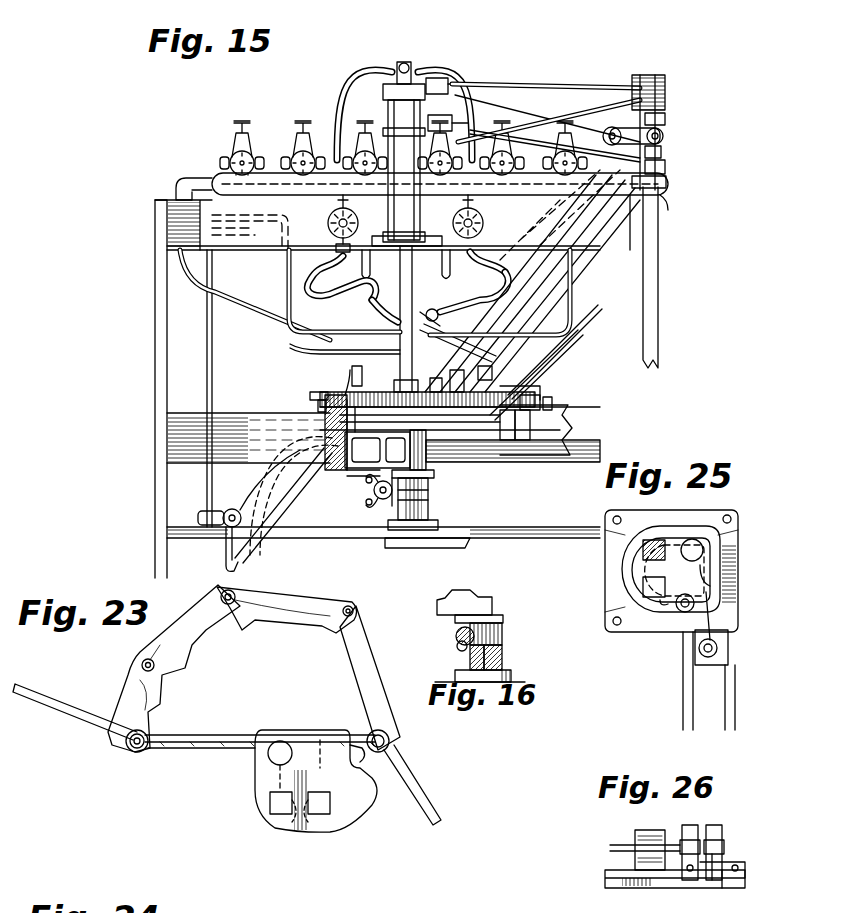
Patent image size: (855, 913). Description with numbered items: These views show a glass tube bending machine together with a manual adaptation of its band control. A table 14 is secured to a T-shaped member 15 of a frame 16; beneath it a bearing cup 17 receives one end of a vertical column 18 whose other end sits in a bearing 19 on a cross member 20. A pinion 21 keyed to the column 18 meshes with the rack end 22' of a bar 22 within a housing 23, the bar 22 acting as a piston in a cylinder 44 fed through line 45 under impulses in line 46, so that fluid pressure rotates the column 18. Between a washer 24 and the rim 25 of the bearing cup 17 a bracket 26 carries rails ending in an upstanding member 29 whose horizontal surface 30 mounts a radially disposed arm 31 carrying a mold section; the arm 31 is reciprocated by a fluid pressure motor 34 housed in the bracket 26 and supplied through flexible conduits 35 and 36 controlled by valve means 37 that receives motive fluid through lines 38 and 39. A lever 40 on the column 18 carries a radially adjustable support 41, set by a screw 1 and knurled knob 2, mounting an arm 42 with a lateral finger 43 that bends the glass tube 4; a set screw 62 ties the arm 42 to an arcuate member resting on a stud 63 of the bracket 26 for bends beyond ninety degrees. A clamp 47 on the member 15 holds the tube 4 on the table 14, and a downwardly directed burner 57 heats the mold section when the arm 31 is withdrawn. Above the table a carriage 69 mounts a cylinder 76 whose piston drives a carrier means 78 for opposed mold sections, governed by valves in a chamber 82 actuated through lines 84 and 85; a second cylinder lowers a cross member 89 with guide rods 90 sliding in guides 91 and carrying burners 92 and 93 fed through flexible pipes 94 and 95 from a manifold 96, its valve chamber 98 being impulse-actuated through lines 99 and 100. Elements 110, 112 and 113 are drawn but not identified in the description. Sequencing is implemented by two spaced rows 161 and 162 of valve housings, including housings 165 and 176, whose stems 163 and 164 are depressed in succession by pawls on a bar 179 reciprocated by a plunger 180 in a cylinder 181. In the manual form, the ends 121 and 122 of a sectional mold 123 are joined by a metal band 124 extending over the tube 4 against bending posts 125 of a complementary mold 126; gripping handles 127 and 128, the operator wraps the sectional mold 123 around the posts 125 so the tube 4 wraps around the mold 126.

In FIG. 15, the screw 1 is at (535, 402).
In FIG. 15, the knurled knob 2 is at (552, 404).
In FIG. 23, the glass tube 4 is at (220, 750).
In FIG. 25, the glass tube 4 is at (625, 578).
In FIG. 26, the glass tube 4 is at (714, 884).
In FIG. 15, the table 14 is at (540, 392).
In FIG. 15, the T-shaped member 15 is at (572, 424).
In FIG. 15, the frame 16 is at (664, 275).
In FIG. 15, the bearing cup 17 is at (420, 386).
In FIG. 15, the vertical column 18 is at (430, 478).
In FIG. 16, the vertical column 18 is at (504, 652).
In FIG. 15, the bearing 19 is at (438, 522).
In FIG. 16, the bearing 19 is at (510, 674).
In FIG. 15, the cross member 20 is at (472, 540).
In FIG. 16, the pinion 21 is at (504, 632).
In FIG. 15, the bar 22 is at (367, 494).
In FIG. 16, the bar 22 is at (449, 657).
In FIG. 16, the rack end 22' is at (441, 639).
In FIG. 15, the housing 23 is at (430, 495).
In FIG. 16, the housing 23 is at (456, 630).
In FIG. 15, the washer 24 is at (434, 472).
In FIG. 16, the washer 24 is at (498, 620).
In FIG. 15, the rim 25 is at (437, 378).
In FIG. 15, the bracket 26 is at (348, 476).
In FIG. 16, the bracket 26 is at (472, 592).
In FIG. 15, the upstanding member 29 is at (332, 422).
In FIG. 15, the horizontal surface 30 is at (325, 408).
In FIG. 15, the radially disposed arm 31 is at (310, 394).
In FIG. 15, the fluid pressure motor 34 is at (388, 440).
In FIG. 15, the flexible conduit 35 is at (266, 518).
In FIG. 15, the flexible conduit 36 is at (262, 522).
In FIG. 15, the valve means 37 is at (196, 484).
In FIG. 15, the line 38 is at (300, 492).
In FIG. 15, the line 39 is at (292, 502).
In FIG. 15, the lever 40 is at (505, 440).
In FIG. 15, the radially adjustable support 41 is at (525, 440).
In FIG. 15, the arm 42 is at (510, 388).
In FIG. 15, the lateral finger 43 is at (460, 369).
In FIG. 15, the cylinder 44 is at (366, 488).
In FIG. 15, the line 45 is at (580, 320).
In FIG. 15, the line 46 is at (462, 322).
In FIG. 15, the clamp 47 is at (492, 370).
In FIG. 15, the downwardly directed burner 57 is at (360, 362).
In FIG. 15, the set screw 62 is at (500, 446).
In FIG. 15, the stud 63 is at (325, 400).
In FIG. 15, the carriage 69 is at (392, 236).
In FIG. 15, the cylinder 76 is at (392, 118).
In FIG. 15, the carrier means 78 is at (345, 385).
In FIG. 15, the valve chamber 82 is at (432, 78).
In FIG. 15, the line 84 is at (505, 84).
In FIG. 15, the line 85 is at (476, 95).
In FIG. 15, the cross member 89 is at (480, 264).
In FIG. 15, the lateral guide bars 90 is at (340, 208).
In FIG. 15, the guides 91 is at (336, 246).
In FIG. 15, the burner 92 is at (438, 317).
In FIG. 15, the burner 93 is at (388, 280).
In FIG. 15, the flexible pipe 94 is at (508, 280).
In FIG. 15, the flexible pipe 95 is at (305, 283).
In FIG. 15, the manifold 96 is at (652, 200).
In FIG. 15, the valve chamber 98 is at (438, 115).
In FIG. 15, the line 99 is at (530, 112).
In FIG. 15, the line 100 is at (555, 144).
In FIG. 15, the tube 110 is at (272, 305).
In FIG. 15, the tube 112 is at (284, 330).
In FIG. 15, the tube 113 is at (290, 346).
In FIG. 23, the end 121 is at (370, 732).
In FIG. 25, the end 121 is at (718, 646).
In FIG. 26, the end 121 is at (724, 842).
In FIG. 23, the end 122 is at (128, 749).
In FIG. 25, the end 122 is at (686, 632).
In FIG. 26, the end 122 is at (684, 840).
In FIG. 23, the sectional mold 123 is at (312, 602).
In FIG. 25, the sectional mold 123 is at (614, 538).
In FIG. 23, the metal ribbon 124 is at (196, 735).
In FIG. 25, the metal ribbon 124 is at (636, 553).
In FIG. 26, the metal ribbon 124 is at (634, 848).
In FIG. 23, the bending posts 125 is at (280, 750).
In FIG. 25, the bending posts 125 is at (690, 538).
In FIG. 26, the bending posts 125 is at (638, 830).
In FIG. 23, the complementary mold 126 is at (332, 815).
In FIG. 25, the complementary mold 126 is at (712, 582).
In FIG. 26, the complementary mold 126 is at (728, 882).
In FIG. 23, the handle 127 is at (420, 772).
In FIG. 25, the handle 127 is at (735, 706).
In FIG. 26, the handle 127 is at (742, 862).
In FIG. 23, the handle 128 is at (46, 700).
In FIG. 25, the handle 128 is at (683, 702).
In FIG. 26, the handle 128 is at (688, 884).
In FIG. 15, the upper row of valve housings 161 is at (672, 83).
In FIG. 15, the lower row of valve housings 162 is at (668, 160).
In FIG. 15, the valve stems 163 is at (672, 120).
In FIG. 15, the valve stems 164 is at (668, 153).
In FIG. 15, the housing 165 is at (668, 180).
In FIG. 15, the housing 176 is at (662, 95).
In FIG. 15, the bar 179 is at (663, 135).
In FIG. 15, the plunger 180 is at (612, 128).
In FIG. 15, the cylinder 181 is at (648, 130).